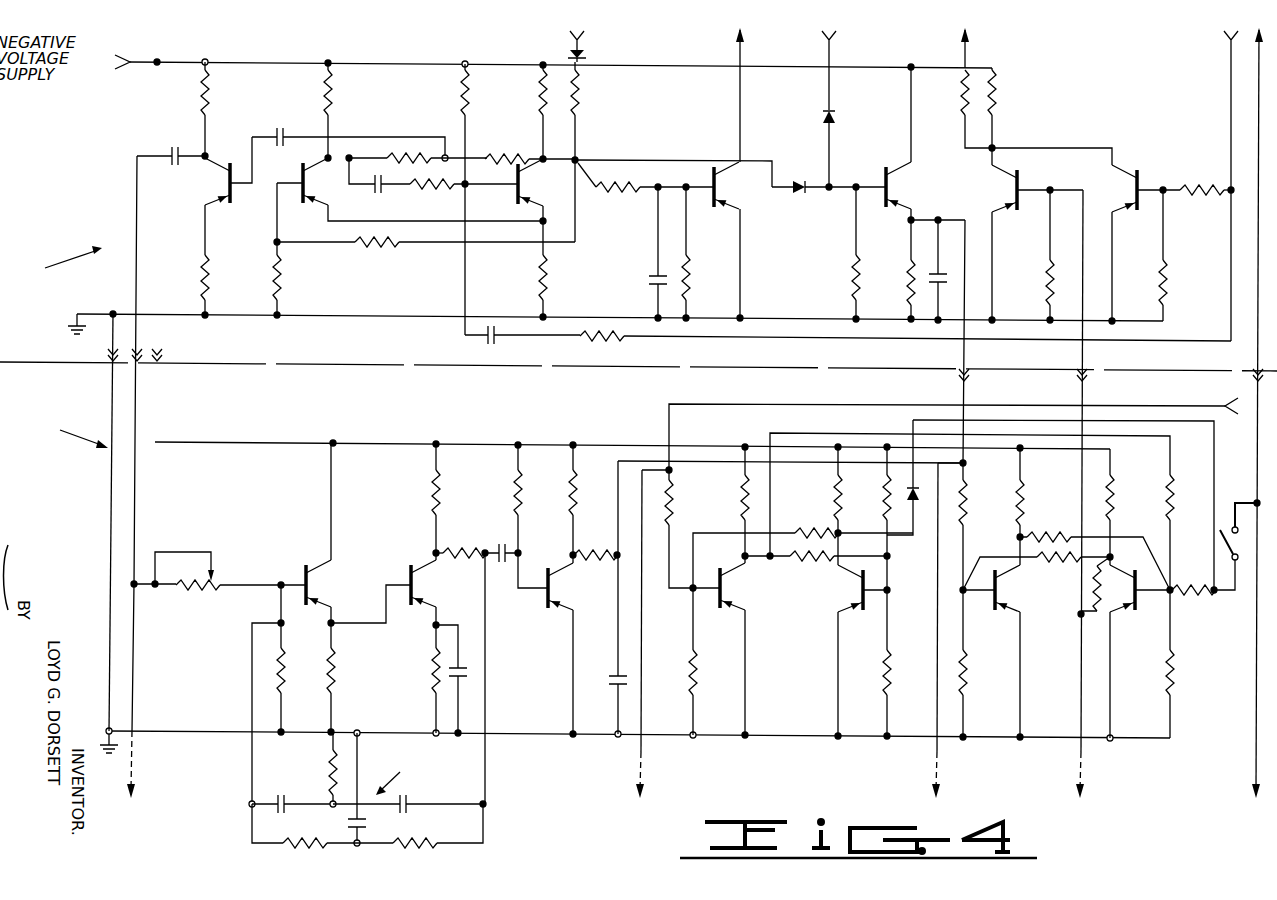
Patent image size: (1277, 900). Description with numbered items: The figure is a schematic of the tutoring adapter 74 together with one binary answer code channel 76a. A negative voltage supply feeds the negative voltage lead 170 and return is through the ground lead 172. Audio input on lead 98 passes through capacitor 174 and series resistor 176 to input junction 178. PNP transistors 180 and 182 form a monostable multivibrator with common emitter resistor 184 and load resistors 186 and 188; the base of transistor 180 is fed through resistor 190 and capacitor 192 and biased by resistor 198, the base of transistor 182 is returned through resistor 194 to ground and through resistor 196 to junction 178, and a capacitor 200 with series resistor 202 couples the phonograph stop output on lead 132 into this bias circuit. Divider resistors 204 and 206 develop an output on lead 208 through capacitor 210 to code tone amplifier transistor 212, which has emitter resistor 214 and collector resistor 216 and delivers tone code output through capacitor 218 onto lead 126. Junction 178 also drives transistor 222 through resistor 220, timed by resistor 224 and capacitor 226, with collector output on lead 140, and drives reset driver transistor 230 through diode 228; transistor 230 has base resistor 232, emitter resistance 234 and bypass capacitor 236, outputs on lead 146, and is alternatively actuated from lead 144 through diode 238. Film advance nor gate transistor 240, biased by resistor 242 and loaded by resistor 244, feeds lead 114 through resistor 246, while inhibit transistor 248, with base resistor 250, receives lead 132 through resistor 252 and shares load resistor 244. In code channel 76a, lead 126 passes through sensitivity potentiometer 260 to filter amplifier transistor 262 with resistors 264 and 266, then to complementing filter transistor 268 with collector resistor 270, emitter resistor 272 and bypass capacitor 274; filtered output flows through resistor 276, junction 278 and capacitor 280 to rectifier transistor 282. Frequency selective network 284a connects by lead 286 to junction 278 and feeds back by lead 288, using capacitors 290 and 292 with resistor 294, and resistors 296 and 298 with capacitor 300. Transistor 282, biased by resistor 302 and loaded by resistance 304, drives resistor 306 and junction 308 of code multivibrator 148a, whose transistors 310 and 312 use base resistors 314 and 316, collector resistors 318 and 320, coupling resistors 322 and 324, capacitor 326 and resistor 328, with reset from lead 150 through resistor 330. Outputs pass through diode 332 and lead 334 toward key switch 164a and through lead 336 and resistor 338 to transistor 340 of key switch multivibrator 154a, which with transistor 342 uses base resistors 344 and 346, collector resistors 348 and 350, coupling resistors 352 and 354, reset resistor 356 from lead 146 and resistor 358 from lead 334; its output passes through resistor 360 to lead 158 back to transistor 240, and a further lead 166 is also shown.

The tutoring adapter 74 is at (44, 272).
The binary answer code channel 76a is at (63, 435).
The audio input lead 98 is at (570, 41).
The lead 114 is at (967, 50).
The lead 126 is at (136, 216).
The lead 132 is at (1228, 55).
The lead 140 is at (742, 50).
The lead 144 is at (832, 42).
The lead 146 is at (960, 390).
The code multivibrator 148a is at (815, 646).
The input lead 150 is at (670, 420).
The key switch multivibrator 154a is at (1072, 646).
The lead 158 is at (1080, 390).
The key switch 164a is at (1222, 548).
The conductor 166 is at (1259, 84).
The negative voltage lead 170 is at (155, 62).
The ground lead 172 is at (218, 316).
The capacitor 174 is at (588, 58).
The resistor 176 is at (579, 91).
The input junction 178 is at (577, 158).
The transistor 180 is at (527, 185).
The transistor 182 is at (312, 185).
The resistor 184 is at (547, 276).
The load resistor 186 is at (540, 108).
The load resistor 188 is at (332, 90).
The resistor 190 is at (438, 190).
The capacitor 192 is at (379, 193).
The resistor 194 is at (281, 275).
The resistor 196 is at (385, 250).
The resistor 198 is at (469, 91).
The capacitor 200 is at (498, 344).
The resistor 202 is at (604, 345).
The resistor 204 is at (395, 150).
The resistor 206 is at (487, 159).
The lead 208 is at (372, 137).
The capacitor 210 is at (290, 135).
The transistor 212 is at (228, 187).
The resistor 214 is at (209, 276).
The resistor 216 is at (209, 93).
The capacitor 218 is at (190, 132).
The resistor 220 is at (604, 192).
The transistor 222 is at (717, 190).
The resistor 224 is at (690, 269).
The capacitor 226 is at (649, 281).
The diode 228 is at (803, 195).
The transistor 230 is at (891, 188).
The resistor 232 is at (853, 284).
The resistance 234 is at (915, 296).
The bypass capacitor 236 is at (937, 270).
The diode 238 is at (836, 117).
The transistor 240 is at (1015, 188).
The resistor 242 is at (1046, 285).
The load resistor 244 is at (997, 100).
The resistor 246 is at (962, 110).
The transistor 248 is at (1128, 187).
The resistor 250 is at (1168, 276).
The resistor 252 is at (1205, 180).
The sensitivity control potentiometer 260 is at (214, 593).
The transistor 262 is at (309, 586).
The resistor 264 is at (285, 670).
The resistor 266 is at (335, 670).
The transistor 268 is at (414, 588).
The resistor 270 is at (440, 478).
The resistor 272 is at (432, 688).
The capacitor 274 is at (468, 676).
The resistor 276 is at (440, 543).
The junction 278 is at (490, 540).
The capacitor 280 is at (498, 562).
The transistor 282 is at (551, 590).
The frequency selective network 284a is at (409, 775).
The lead 286 is at (487, 656).
The lead 288 is at (250, 660).
The capacitor 290 is at (413, 798).
The capacitor 292 is at (290, 800).
The resistor 294 is at (325, 758).
The resistor 296 is at (408, 838).
The resistor 298 is at (302, 838).
The capacitor 300 is at (366, 826).
The resistor 302 is at (522, 494).
The resistance 304 is at (583, 494).
The resistor 306 is at (596, 545).
The input junction 308 is at (617, 558).
The transistor 310 is at (723, 590).
The transistor 312 is at (860, 590).
The resistor 314 is at (697, 690).
The resistor 316 is at (883, 680).
The resistor 318 is at (741, 485).
The resistor 320 is at (833, 486).
The resistor 322 is at (810, 564).
The resistor 324 is at (806, 526).
The capacitor 326 is at (610, 676).
The resistor 328 is at (885, 492).
The resistor 330 is at (673, 506).
The diode 332 is at (920, 492).
The lead 334 is at (1003, 420).
The lead 336 is at (860, 440).
The resistor 338 is at (1175, 500).
The transistor 340 is at (1150, 605).
The transistor 342 is at (1000, 600).
The resistor 344 is at (1165, 686).
The resistor 346 is at (967, 676).
The resistor 348 is at (1114, 498).
The resistor 350 is at (1024, 484).
The resistor 352 is at (1050, 530).
The resistor 354 is at (1056, 565).
The resistor 356 is at (967, 503).
The resistor 358 is at (1195, 608).
The resistor 360 is at (1101, 590).